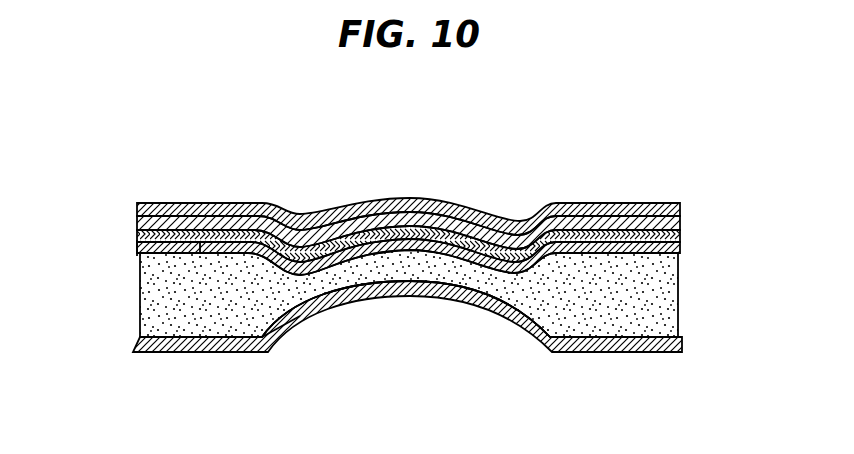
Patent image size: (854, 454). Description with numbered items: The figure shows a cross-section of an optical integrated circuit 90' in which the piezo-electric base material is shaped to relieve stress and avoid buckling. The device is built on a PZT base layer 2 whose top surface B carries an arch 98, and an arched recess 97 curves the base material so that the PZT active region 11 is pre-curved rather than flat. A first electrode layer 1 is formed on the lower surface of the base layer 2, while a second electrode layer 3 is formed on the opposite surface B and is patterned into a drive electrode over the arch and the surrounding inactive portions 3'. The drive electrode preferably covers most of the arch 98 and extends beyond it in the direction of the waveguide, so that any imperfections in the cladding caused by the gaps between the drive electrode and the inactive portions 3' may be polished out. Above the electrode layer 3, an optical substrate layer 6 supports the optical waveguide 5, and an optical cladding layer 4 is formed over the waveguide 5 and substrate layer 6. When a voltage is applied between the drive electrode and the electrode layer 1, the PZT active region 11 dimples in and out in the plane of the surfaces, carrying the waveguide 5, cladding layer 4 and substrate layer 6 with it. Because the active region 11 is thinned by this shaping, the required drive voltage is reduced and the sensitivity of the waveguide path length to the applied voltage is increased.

The optical integrated circuit 90' is at (197, 104).
The optical cladding layer 4 is at (607, 204).
The optical waveguide 5 is at (680, 221).
The optical substrate layer 6 is at (680, 233).
The inactive portions of the electrode layer 3' is at (406, 248).
The second electrode layer 3 is at (132, 273).
The piezo-electric base layer 2 is at (678, 303).
The first electrode layer 1 is at (682, 343).
The PZT active region 11 is at (246, 307).
The top surface B is at (549, 264).
The arched recess 97 is at (405, 321).
The arch 98 is at (323, 284).